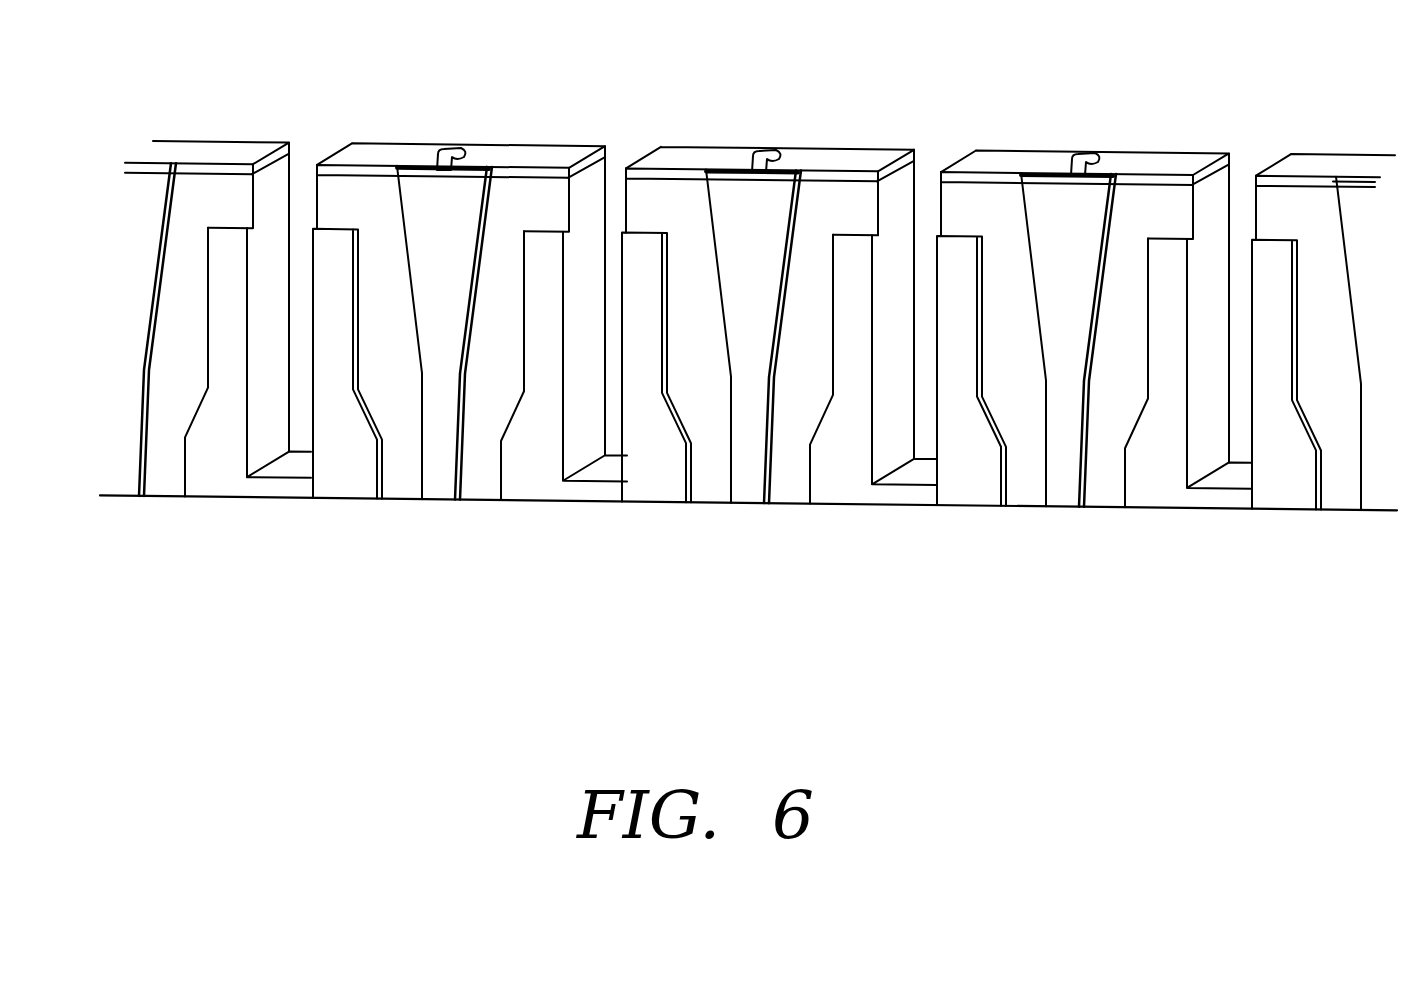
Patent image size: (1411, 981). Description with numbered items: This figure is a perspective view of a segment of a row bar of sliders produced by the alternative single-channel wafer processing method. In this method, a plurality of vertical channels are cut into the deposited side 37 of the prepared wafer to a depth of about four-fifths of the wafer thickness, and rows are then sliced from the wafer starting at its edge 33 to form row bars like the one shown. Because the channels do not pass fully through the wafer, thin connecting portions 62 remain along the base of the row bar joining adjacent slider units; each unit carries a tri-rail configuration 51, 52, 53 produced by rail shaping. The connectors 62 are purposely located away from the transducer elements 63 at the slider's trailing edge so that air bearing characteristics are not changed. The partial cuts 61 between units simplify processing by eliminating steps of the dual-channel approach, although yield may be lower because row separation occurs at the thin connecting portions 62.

The edge 33 is at (655, 193).
The deposited surface 37 is at (855, 160).
The first rail 51 is at (672, 545).
The second rail 52 is at (751, 545).
The third rail 53 is at (833, 545).
The gap between frames 61 is at (626, 113).
The connecting portion 62 is at (598, 545).
The transducer element 63 is at (760, 152).